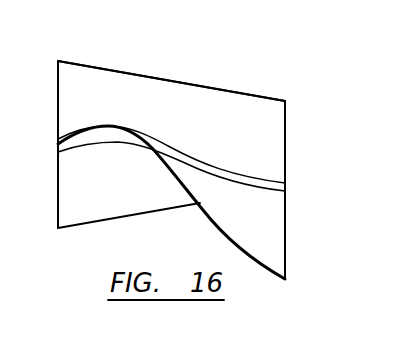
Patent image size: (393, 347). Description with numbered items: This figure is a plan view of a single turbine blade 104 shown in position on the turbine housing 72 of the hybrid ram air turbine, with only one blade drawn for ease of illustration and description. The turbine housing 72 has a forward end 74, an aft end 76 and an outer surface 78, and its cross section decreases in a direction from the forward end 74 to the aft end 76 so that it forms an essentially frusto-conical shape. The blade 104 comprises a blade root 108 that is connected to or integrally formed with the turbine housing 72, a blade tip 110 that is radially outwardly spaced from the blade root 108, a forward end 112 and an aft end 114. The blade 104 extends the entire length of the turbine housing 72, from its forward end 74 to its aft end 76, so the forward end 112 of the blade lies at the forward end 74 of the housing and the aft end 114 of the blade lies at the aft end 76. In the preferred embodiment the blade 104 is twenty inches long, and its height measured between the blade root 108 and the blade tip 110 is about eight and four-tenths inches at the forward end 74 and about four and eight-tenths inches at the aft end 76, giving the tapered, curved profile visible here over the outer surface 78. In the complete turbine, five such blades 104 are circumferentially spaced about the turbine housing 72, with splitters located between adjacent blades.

The turbine blade 104 is at (291, 202).
The turbine housing 72 is at (140, 75).
The forward end 74 is at (58, 108).
The aft end 76 is at (285, 140).
The outer surface 78 is at (182, 112).
The blade root 108 is at (258, 184).
The blade tip 110 is at (218, 230).
The forward end 112 is at (58, 146).
The aft end 114 is at (285, 223).